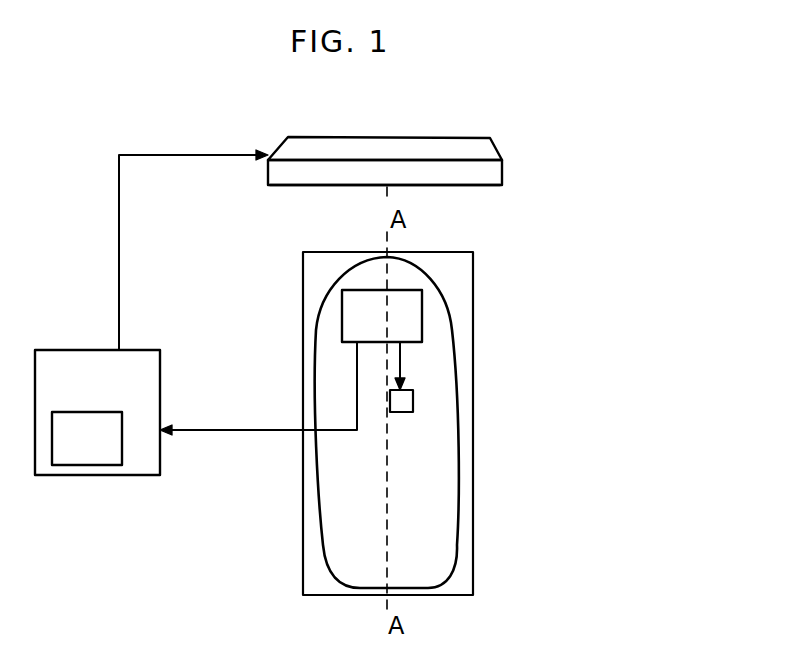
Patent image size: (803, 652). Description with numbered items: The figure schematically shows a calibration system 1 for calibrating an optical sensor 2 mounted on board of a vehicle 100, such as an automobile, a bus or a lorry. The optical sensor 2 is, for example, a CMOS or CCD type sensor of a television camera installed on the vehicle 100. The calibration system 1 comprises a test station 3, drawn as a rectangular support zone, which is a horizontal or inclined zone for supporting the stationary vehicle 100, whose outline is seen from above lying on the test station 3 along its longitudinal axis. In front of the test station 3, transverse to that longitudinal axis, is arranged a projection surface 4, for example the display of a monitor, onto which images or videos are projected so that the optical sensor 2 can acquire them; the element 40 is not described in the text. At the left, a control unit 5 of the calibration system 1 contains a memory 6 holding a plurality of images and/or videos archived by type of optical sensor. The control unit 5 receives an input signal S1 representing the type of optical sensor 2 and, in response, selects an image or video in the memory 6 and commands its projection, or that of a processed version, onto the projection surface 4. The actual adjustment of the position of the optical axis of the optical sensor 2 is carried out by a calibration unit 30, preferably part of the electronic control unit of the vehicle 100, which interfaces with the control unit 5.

The calibration system 1 is at (670, 276).
The optical sensor 2 is at (402, 412).
The test station 3 is at (480, 402).
The projection surface 4 is at (468, 186).
The control unit 5 is at (97, 397).
The memory 6 is at (96, 459).
The calibration unit 30 is at (396, 331).
The upper device 40 is at (496, 147).
The vehicle 100 is at (462, 543).
The input signal S1 is at (258, 388).